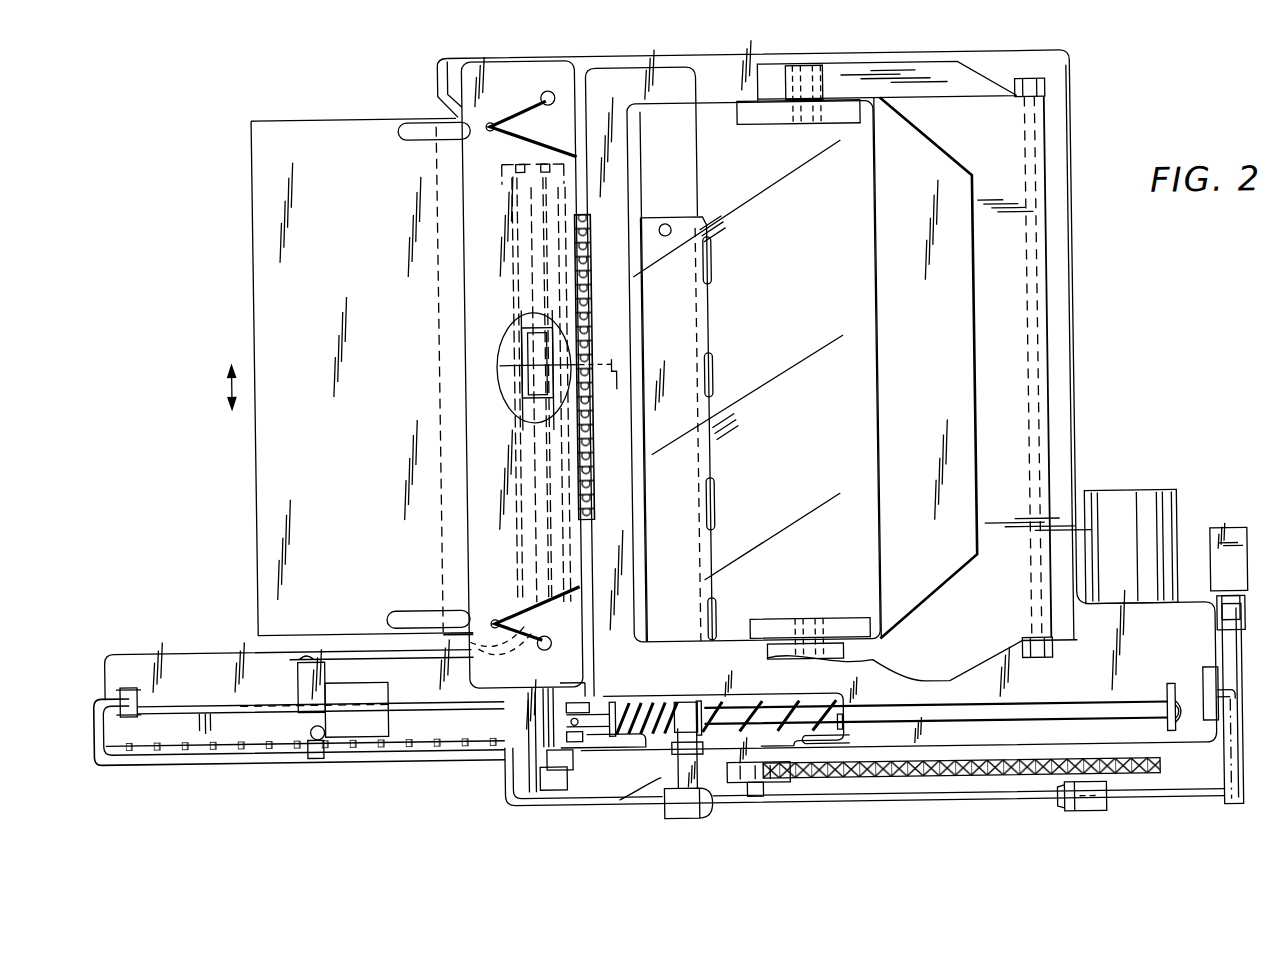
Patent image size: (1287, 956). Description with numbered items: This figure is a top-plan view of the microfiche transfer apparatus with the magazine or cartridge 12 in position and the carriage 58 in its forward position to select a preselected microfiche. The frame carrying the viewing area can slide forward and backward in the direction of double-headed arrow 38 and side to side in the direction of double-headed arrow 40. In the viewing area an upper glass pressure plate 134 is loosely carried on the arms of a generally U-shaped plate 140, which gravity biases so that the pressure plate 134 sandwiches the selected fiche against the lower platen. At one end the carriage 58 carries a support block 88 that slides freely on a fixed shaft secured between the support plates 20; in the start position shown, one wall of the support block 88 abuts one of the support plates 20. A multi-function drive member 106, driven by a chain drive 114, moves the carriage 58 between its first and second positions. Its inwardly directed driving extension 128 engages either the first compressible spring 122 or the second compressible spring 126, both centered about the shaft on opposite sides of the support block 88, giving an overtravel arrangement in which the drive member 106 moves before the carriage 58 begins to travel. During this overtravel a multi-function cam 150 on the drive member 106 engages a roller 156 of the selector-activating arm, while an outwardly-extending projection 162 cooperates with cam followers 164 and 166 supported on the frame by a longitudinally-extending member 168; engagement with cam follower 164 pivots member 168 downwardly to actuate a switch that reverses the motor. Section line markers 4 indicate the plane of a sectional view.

The double-headed arrow 38 is at (747, 42).
The magazine or cartridge 12 is at (381, 359).
The double-headed arrow 40 is at (228, 376).
The upper glass pressure plate 134 is at (808, 302).
The generally U-shaped plate 140 is at (1020, 295).
The support block 88 is at (776, 689).
The support plates 20 is at (1174, 671).
The carriage 58 is at (626, 698).
The first compressible spring 122 is at (641, 702).
The driving extension 128 is at (684, 705).
The second compressible spring 126 is at (813, 698).
The section line 4 is at (733, 372).
The longitudinally-extending member 168 is at (174, 756).
The multi-function cam 150 is at (551, 770).
The roller 156 is at (656, 777).
The outwardly-extending projection 162 is at (683, 806).
The cam follower 164 is at (716, 818).
The multi-function drive member 106 is at (714, 760).
The chain drive 114 is at (953, 780).
The cam follower 166 is at (1081, 811).